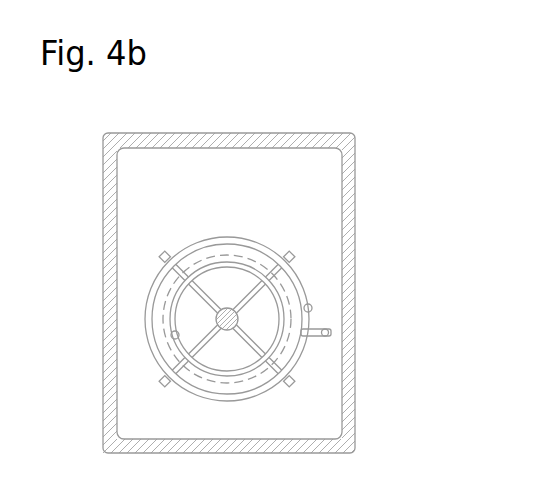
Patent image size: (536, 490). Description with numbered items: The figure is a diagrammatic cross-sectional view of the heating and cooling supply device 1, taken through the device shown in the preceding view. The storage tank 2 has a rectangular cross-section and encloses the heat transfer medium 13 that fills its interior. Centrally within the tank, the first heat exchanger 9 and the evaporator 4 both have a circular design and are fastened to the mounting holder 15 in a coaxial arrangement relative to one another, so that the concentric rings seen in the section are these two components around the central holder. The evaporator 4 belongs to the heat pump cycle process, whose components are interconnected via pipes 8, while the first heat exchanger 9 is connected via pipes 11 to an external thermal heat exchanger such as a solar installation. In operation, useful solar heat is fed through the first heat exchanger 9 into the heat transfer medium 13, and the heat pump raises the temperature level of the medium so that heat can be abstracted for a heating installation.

The heating and cooling supply device 1 is at (268, 111).
The storage tank 2 is at (356, 160).
The evaporator 4 is at (285, 285).
The pipes 8 is at (225, 297).
The first heat exchanger 9 is at (281, 322).
The pipes 11 is at (366, 321).
The heat transfer medium 13 is at (145, 417).
The mounting holder 15 is at (138, 294).